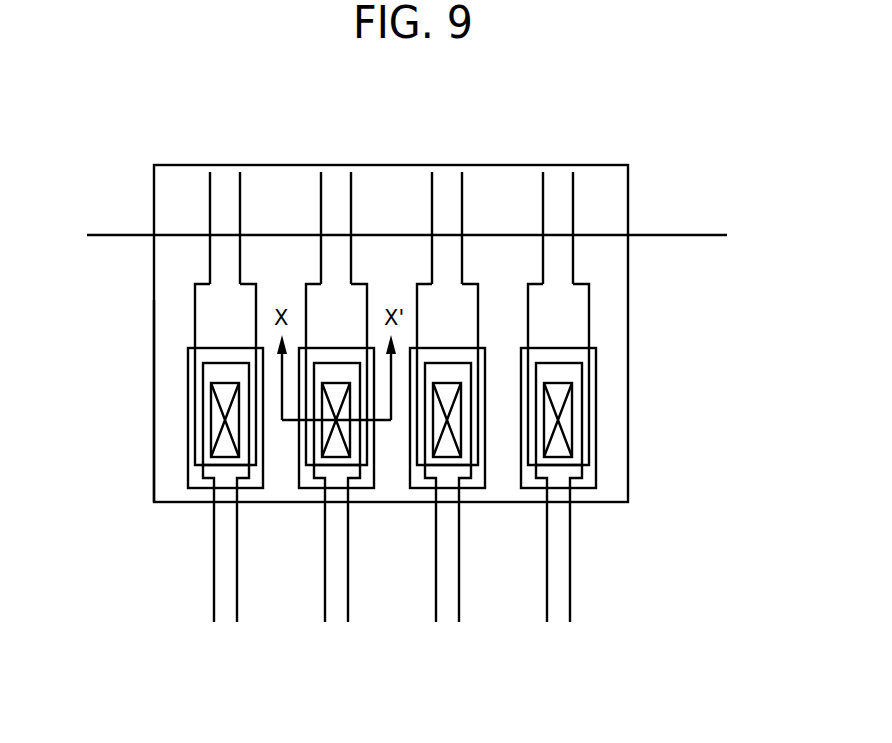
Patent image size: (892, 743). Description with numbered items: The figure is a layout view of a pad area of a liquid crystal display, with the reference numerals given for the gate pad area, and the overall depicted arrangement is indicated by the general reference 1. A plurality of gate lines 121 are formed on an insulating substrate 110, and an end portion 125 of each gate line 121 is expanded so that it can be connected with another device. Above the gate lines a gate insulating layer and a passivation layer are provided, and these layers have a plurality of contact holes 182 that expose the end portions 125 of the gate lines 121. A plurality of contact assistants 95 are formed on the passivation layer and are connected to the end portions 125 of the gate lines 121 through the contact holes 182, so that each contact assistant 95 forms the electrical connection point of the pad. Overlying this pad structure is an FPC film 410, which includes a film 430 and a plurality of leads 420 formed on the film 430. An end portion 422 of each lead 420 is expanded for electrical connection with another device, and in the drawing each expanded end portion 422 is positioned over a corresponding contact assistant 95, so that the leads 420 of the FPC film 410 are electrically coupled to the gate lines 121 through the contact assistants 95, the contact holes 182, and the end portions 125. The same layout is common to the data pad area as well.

The display device 1 is at (743, 262).
The pixel electrode 95 is at (596, 468).
The gate line 110 is at (679, 234).
The data line 121 is at (570, 567).
The semiconductor layer 125 is at (582, 377).
The contact hole 182 is at (574, 417).
The first substrate / sealing line 410 is at (153, 195).
The gate electrode line 420 is at (573, 191).
The gate electrode 422 is at (590, 305).
The frame edge 430 is at (154, 347).